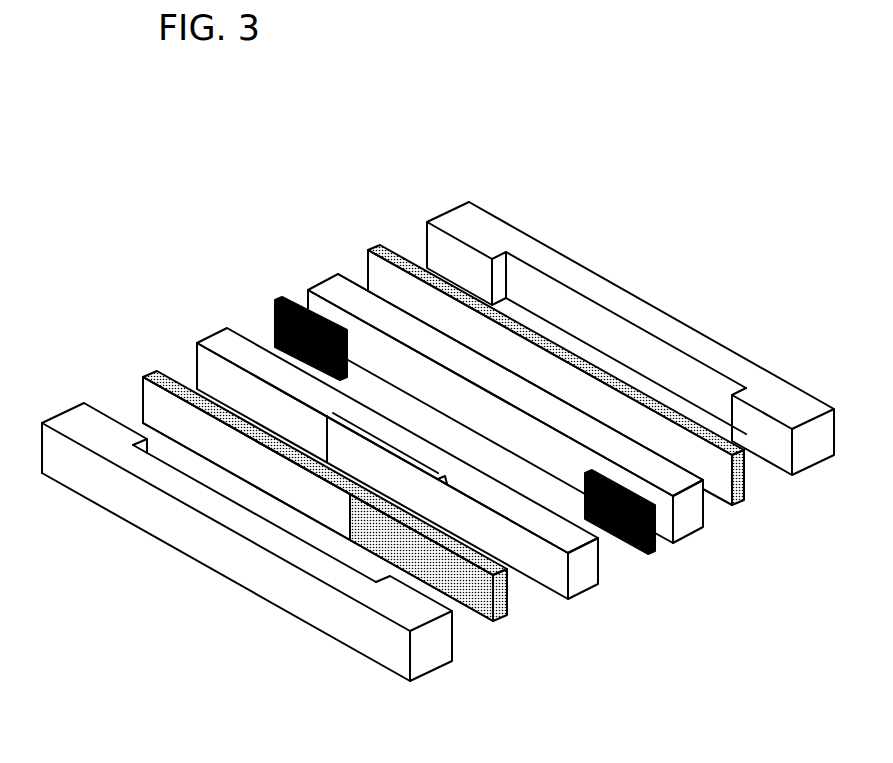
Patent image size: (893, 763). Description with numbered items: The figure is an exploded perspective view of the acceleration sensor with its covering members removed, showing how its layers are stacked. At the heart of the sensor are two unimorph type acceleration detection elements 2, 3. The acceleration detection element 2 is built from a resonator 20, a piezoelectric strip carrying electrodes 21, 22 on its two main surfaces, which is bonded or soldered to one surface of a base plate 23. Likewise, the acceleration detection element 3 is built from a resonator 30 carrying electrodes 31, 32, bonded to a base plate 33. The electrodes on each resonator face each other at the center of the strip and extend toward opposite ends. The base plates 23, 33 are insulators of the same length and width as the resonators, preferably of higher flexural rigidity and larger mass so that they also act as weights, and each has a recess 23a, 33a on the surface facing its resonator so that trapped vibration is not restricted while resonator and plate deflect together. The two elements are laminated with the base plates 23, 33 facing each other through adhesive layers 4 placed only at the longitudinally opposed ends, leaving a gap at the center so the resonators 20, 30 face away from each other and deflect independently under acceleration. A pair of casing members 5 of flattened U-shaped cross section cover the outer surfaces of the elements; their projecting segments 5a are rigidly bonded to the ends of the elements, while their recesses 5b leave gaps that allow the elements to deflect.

The acceleration detection element 2 is at (518, 385).
The resonator 20 is at (368, 253).
The electrode 21 is at (662, 382).
The electrode 22 is at (513, 320).
The base plate 23 is at (483, 387).
The recess 23a is at (573, 330).
The acceleration detection element 3 is at (350, 480).
The resonator 30 is at (138, 374).
The electrode 31 is at (183, 443).
The electrode 32 is at (468, 540).
The base plate 33 is at (380, 479).
The recess 33a is at (420, 495).
The adhesive layer 4 is at (273, 310).
The casing member 5 is at (432, 439).
The projecting segment 5a is at (433, 243).
The recess 5b is at (670, 352).